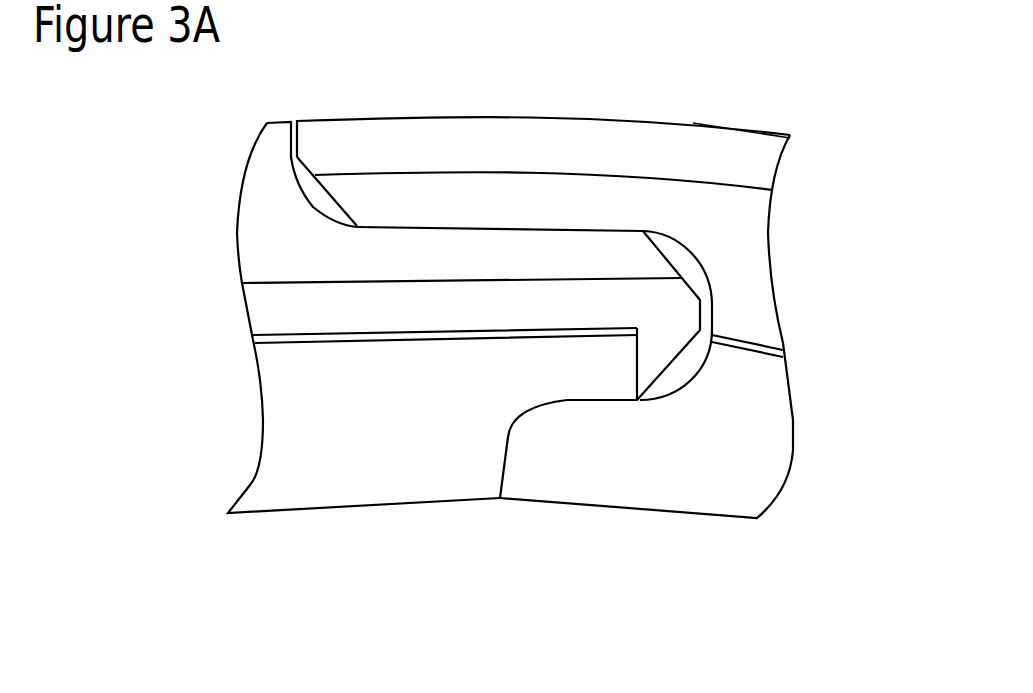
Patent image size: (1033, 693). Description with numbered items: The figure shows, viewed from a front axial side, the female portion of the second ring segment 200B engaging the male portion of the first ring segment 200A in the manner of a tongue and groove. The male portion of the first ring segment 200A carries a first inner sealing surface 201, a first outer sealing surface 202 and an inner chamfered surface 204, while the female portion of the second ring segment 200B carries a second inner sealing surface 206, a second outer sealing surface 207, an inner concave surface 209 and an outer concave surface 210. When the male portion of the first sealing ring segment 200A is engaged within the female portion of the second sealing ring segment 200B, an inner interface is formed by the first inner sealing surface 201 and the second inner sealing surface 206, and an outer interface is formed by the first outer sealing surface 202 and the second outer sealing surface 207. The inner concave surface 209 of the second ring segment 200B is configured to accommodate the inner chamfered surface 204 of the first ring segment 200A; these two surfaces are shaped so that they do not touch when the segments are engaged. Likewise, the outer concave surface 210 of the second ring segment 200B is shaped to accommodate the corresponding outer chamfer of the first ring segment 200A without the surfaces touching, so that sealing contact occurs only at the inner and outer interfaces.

The first ring segment 200A is at (195, 303).
The second ring segment 200B is at (822, 325).
The first inner sealing surface 201 is at (597, 402).
The first outer sealing surface 202 is at (718, 102).
The inner chamfered surface 204 is at (660, 377).
The second inner sealing surface 206 is at (597, 400).
The second outer sealing surface 207 is at (570, 261).
The inner concave surface 209 is at (710, 353).
The outer concave surface 210 is at (698, 255).